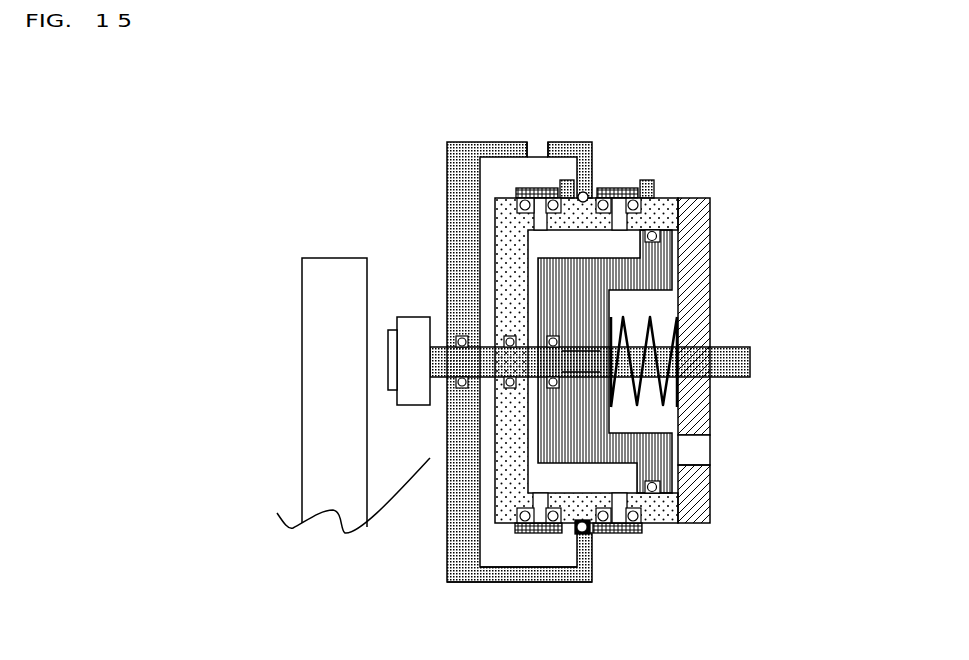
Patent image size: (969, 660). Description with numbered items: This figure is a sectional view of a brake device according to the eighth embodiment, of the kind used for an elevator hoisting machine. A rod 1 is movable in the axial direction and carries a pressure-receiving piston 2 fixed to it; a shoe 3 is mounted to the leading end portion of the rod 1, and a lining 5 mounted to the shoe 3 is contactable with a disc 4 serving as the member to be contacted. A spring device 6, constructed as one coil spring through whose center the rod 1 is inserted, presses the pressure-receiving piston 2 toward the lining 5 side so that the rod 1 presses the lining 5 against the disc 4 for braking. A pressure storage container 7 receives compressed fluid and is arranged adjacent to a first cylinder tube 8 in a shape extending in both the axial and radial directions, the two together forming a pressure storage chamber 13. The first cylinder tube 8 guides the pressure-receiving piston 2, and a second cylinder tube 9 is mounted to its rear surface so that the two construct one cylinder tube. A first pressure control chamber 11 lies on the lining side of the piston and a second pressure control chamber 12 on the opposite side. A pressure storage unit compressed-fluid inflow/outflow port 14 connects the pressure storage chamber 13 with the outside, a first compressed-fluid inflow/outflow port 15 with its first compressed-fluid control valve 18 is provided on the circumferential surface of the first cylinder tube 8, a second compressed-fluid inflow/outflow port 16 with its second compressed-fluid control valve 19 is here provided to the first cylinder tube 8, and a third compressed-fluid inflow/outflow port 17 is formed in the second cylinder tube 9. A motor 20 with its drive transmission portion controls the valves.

The rod 1 is at (740, 362).
The pressure-receiving piston 2 is at (652, 272).
The shoe 3 is at (413, 375).
The disc 4 is at (325, 345).
The lining 5 is at (395, 357).
The spring device 6 is at (652, 328).
The pressure storage container 7 is at (457, 253).
The first cylinder tube 8 is at (503, 490).
The second cylinder tube 9 is at (695, 505).
The first pressure control chamber 11 is at (552, 533).
The second pressure control chamber 12 is at (648, 421).
The pressure storage chamber 13 is at (516, 550).
The pressure storage unit compressed-fluid inflow/outflow port 14 is at (538, 150).
The first compressed-fluid inflow/outflow port 15 is at (537, 215).
The second compressed-fluid inflow/outflow port 16 is at (652, 188).
The third compressed-fluid inflow/outflow port 17 is at (692, 452).
The first compressed-fluid control valve 18 is at (523, 187).
The second compressed-fluid control valve 19 is at (613, 535).
The motor 20 is at (565, 190).